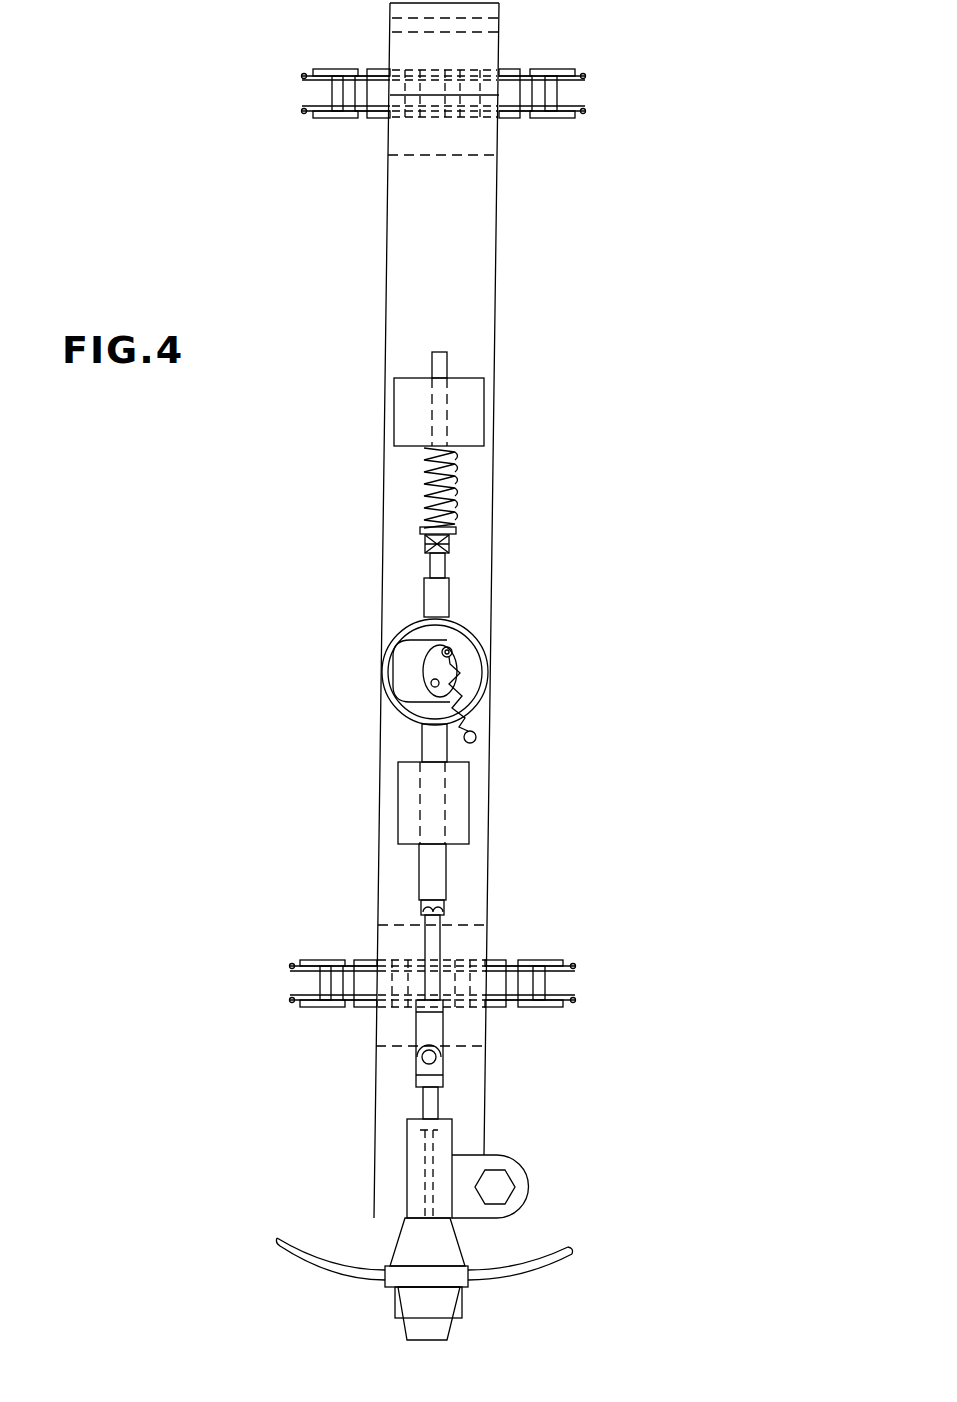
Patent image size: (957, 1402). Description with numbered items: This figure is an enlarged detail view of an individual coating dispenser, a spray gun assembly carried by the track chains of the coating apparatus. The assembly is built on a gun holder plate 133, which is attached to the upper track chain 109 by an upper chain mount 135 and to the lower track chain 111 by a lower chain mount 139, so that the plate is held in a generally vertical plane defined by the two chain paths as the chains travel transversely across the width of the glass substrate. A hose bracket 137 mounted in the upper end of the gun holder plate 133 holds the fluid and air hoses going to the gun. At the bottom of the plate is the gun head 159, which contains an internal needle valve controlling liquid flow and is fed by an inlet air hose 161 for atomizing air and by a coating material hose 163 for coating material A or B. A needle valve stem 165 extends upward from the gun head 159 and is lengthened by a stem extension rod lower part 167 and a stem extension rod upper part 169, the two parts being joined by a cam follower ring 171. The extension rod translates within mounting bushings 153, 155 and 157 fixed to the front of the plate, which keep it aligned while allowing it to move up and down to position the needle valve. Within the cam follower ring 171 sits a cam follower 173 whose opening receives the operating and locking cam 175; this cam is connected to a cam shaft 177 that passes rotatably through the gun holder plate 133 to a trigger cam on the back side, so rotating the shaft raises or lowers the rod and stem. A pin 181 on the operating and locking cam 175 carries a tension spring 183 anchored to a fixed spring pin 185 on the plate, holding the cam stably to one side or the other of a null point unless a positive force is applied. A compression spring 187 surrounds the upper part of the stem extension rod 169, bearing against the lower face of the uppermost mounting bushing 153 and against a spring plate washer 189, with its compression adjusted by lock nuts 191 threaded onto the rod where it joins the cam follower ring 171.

The upper track chain 109 is at (545, 118).
The lower track chain 111 is at (323, 960).
The gun holder plate 133 is at (490, 252).
The upper chain mount 135 is at (430, 115).
The hose bracket 137 is at (498, 52).
The lower chain mount 139 is at (448, 962).
The mounting bushing 153 is at (476, 415).
The mounting bushing 155 is at (466, 806).
The mounting bushing 157 is at (455, 1138).
The gun head 159 is at (435, 1340).
The inlet air hose 161 is at (300, 1263).
The coating material hose 163 is at (548, 1265).
The needle valve stem 165 is at (425, 1188).
The stem extension rod (lower part) 167 is at (420, 1105).
The stem extension rod (upper part) 169 is at (438, 362).
The cam follower ring 171 is at (487, 645).
The cam follower 173 is at (477, 671).
The operating and locking cam 175 is at (423, 672).
The cam shaft 177 is at (432, 686).
The pin 181 is at (450, 650).
The tension spring 183 is at (468, 718).
The fixed spring pin 185 is at (477, 737).
The compression spring 187 is at (425, 475).
The spring plate washer 189 is at (425, 529).
The lock nuts 191 is at (450, 548).